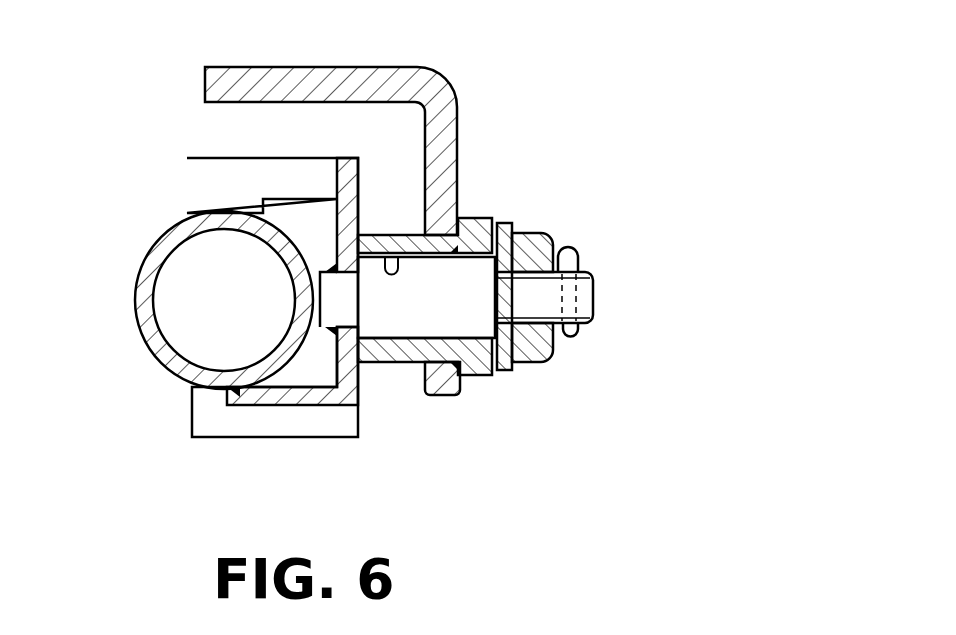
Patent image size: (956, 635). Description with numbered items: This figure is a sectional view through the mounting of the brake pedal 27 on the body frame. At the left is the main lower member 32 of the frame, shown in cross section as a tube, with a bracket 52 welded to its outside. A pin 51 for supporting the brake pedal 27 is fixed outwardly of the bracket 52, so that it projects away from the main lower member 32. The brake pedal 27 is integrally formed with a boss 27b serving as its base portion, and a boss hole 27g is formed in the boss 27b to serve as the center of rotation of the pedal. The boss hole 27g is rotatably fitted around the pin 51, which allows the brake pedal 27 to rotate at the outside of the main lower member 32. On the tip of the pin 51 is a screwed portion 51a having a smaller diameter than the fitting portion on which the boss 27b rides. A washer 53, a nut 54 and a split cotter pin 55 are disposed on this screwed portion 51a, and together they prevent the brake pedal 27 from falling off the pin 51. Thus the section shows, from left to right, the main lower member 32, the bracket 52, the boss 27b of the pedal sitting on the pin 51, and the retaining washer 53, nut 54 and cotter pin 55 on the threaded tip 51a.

The brake pedal 27 is at (457, 120).
The boss hole 27g is at (383, 256).
The boss 27b is at (383, 350).
The main lower member 32 is at (153, 350).
The pin 51 is at (473, 307).
The screwed portion 51a is at (538, 283).
The bracket 52 is at (257, 397).
The washer 53 is at (503, 358).
The nut 54 is at (550, 358).
The split cotter pin 55 is at (568, 338).